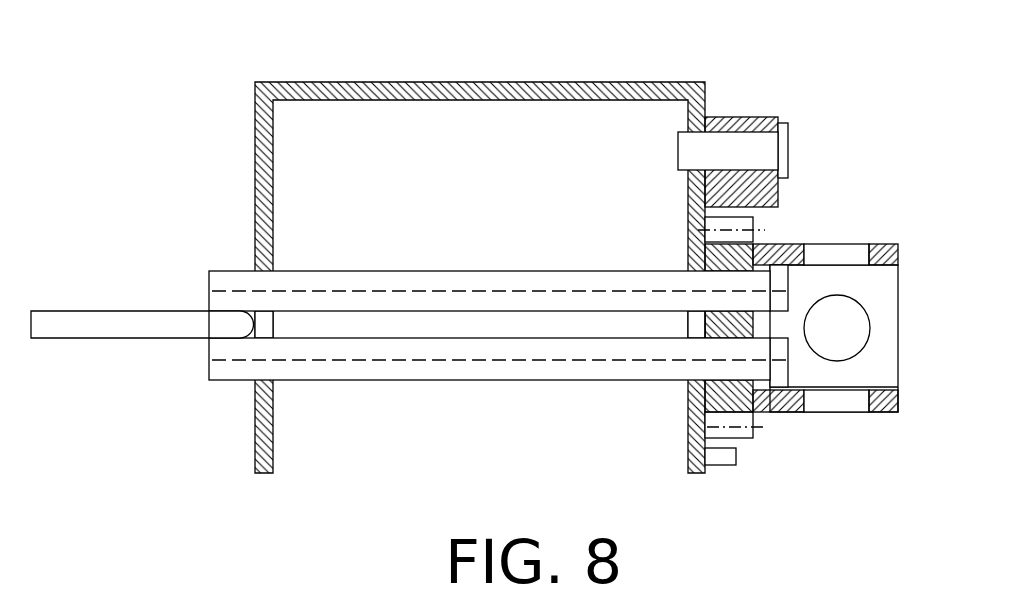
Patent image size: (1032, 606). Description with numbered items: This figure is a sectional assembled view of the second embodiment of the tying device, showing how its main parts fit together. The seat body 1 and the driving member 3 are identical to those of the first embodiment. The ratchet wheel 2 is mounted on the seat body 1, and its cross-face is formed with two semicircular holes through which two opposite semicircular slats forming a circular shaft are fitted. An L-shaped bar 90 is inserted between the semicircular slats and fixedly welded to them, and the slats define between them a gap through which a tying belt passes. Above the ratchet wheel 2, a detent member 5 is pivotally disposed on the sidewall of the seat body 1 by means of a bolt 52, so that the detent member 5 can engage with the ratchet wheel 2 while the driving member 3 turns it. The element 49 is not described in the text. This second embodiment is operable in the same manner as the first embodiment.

The seat body 1 is at (485, 92).
The ratchet wheel 2 is at (740, 430).
The driving member 3 is at (782, 413).
The detent member 5 is at (761, 122).
The bolt 52 is at (743, 157).
The guide rods 49 is at (402, 284).
The L-shaped bar 90 is at (151, 327).